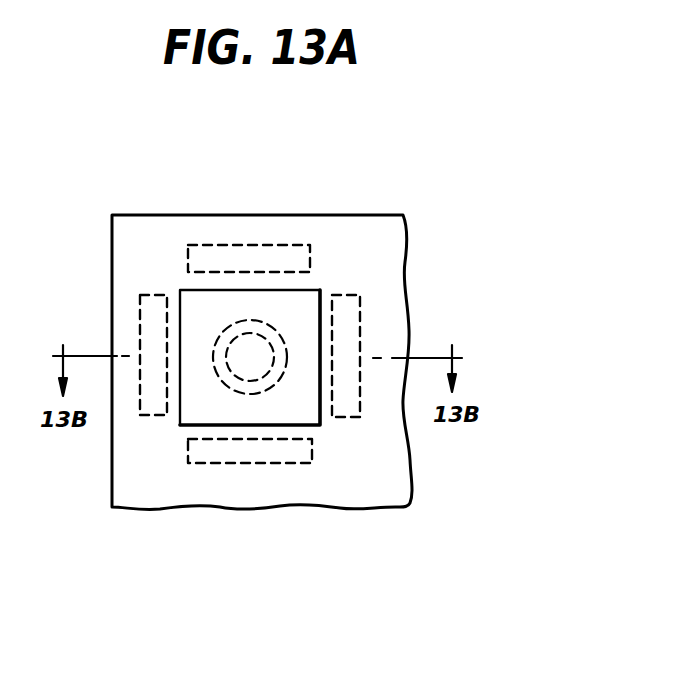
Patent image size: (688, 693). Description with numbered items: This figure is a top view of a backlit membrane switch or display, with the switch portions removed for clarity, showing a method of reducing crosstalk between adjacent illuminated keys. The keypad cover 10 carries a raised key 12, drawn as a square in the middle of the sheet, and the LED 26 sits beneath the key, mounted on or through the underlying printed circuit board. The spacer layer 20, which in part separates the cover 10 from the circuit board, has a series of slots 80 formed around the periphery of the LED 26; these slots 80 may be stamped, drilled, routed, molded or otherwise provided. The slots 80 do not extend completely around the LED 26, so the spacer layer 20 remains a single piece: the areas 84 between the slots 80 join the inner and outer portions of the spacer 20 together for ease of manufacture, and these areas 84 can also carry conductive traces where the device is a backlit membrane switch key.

The keypad cover 10 is at (172, 215).
The raised key 12 is at (183, 290).
The spacer layer 20 is at (391, 268).
The LED 26 is at (232, 384).
The slots 80 is at (333, 296).
The area between the slots 84 is at (333, 418).